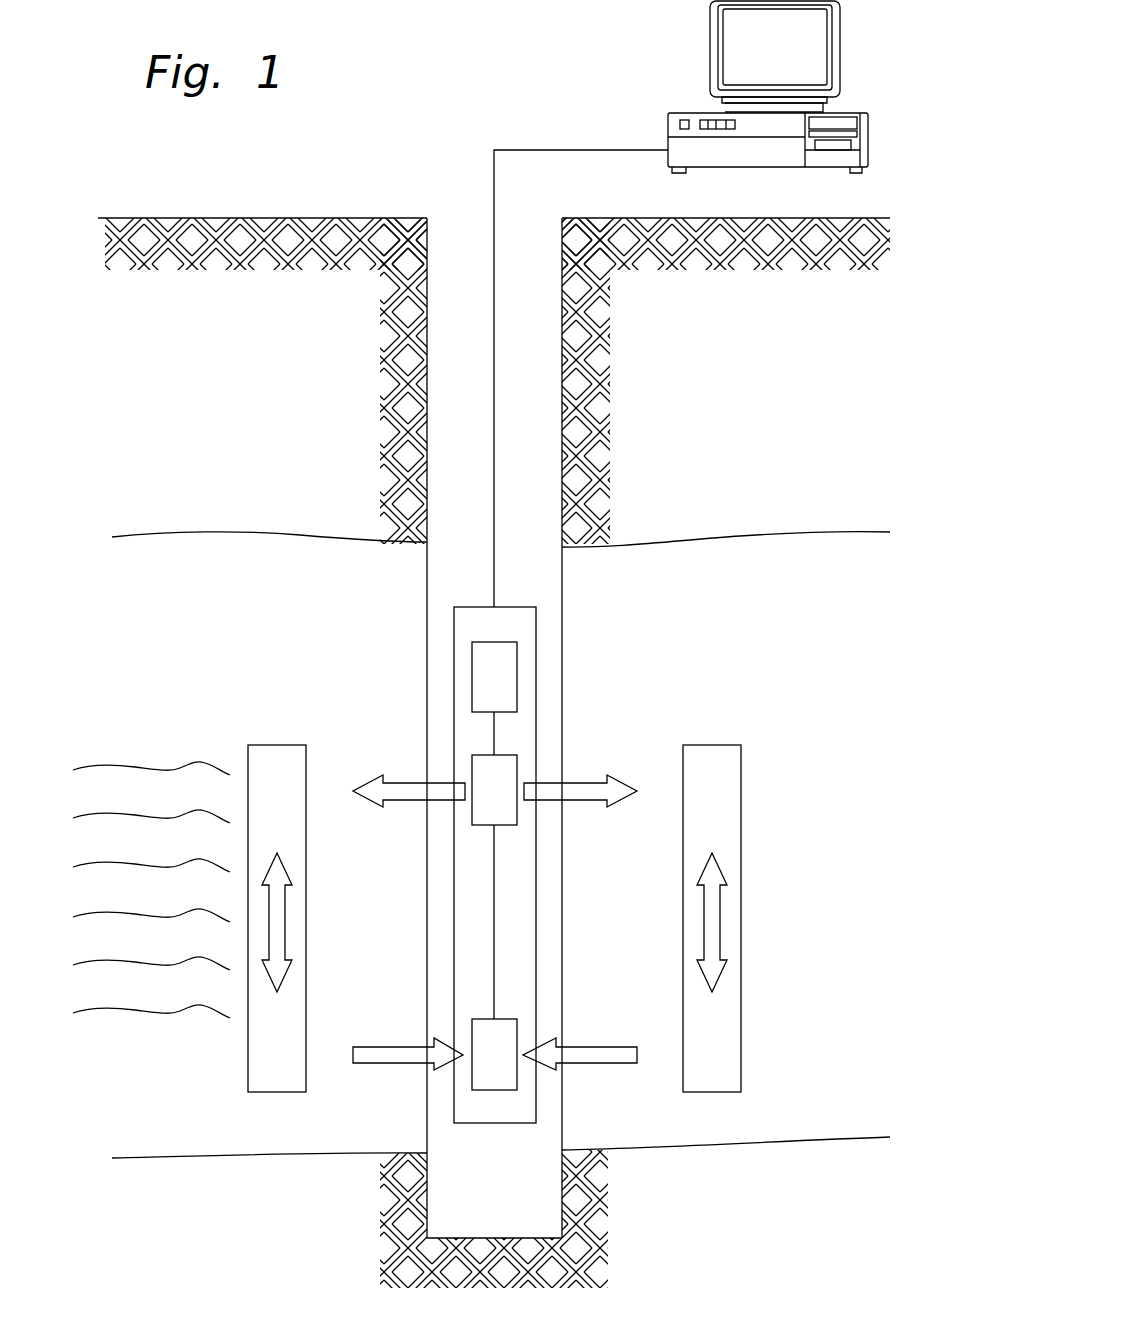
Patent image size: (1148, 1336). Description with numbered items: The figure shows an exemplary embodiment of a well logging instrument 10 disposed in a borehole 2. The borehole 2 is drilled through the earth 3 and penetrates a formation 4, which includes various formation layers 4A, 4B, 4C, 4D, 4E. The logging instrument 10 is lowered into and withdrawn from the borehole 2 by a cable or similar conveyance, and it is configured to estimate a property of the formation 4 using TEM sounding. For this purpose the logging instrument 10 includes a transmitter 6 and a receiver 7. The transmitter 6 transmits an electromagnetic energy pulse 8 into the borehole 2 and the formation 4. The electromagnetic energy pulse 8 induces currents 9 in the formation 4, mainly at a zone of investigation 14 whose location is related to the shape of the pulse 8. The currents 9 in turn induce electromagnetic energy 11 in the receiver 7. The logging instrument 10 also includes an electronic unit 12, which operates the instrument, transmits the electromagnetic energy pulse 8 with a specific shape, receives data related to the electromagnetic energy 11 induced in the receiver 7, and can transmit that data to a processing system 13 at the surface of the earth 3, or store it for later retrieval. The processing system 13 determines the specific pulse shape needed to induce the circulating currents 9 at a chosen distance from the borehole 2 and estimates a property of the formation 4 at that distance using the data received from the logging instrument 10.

The borehole 2 is at (535, 342).
The earth 3 is at (780, 384).
The formation 4 is at (780, 620).
The formation layer 4A is at (164, 801).
The formation layer 4B is at (164, 849).
The formation layer 4C is at (164, 897).
The formation layer 4D is at (164, 947).
The formation layer 4E is at (164, 994).
The transmitter 6 is at (472, 768).
The receiver 7 is at (472, 1032).
The electromagnetic energy pulse 8 is at (580, 783).
The currents 9 is at (720, 925).
The well logging instrument 10 is at (454, 908).
The electromagnetic energy 11 is at (588, 1047).
The electronic unit 12 is at (472, 676).
The processing system 13 is at (690, 113).
The zone of investigation 14 is at (741, 776).